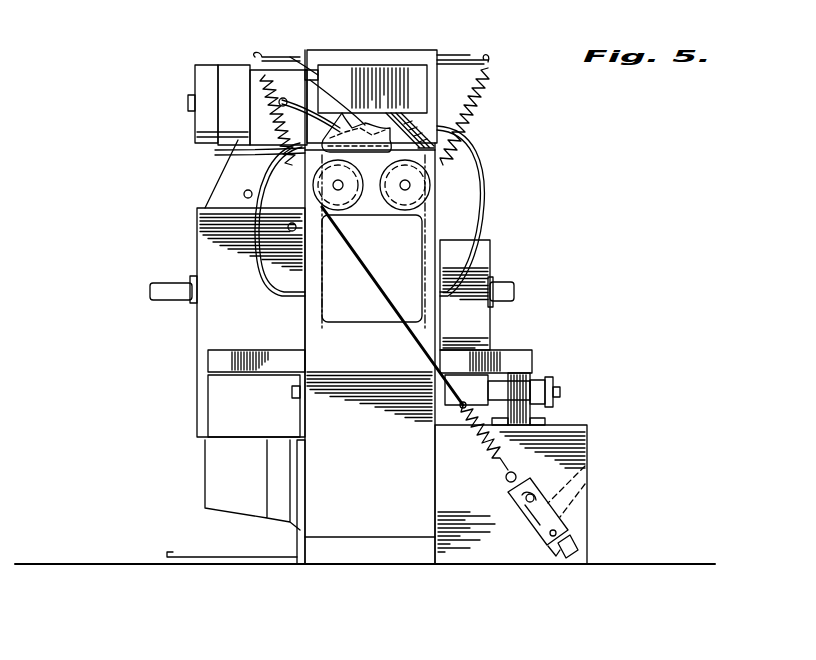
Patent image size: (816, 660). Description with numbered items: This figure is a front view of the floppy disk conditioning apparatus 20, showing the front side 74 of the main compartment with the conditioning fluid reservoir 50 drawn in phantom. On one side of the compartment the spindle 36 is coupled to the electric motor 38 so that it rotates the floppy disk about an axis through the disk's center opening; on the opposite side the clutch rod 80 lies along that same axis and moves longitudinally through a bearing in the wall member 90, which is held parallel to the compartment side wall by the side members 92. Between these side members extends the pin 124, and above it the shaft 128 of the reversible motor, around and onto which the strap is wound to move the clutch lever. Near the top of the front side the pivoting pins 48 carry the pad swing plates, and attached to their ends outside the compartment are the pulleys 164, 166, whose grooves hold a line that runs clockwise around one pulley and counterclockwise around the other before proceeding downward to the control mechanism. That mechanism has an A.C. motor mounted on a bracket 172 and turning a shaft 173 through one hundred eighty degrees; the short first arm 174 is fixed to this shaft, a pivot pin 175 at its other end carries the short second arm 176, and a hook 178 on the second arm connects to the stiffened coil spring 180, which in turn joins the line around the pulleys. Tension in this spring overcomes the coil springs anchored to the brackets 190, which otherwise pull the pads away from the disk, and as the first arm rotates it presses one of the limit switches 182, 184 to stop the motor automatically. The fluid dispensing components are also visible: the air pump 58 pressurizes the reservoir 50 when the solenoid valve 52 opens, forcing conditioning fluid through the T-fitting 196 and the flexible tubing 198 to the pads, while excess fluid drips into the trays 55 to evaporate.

The apparatus 20 is at (645, 183).
The spindle 36 is at (515, 292).
The electric motor 38 is at (492, 255).
The pivoting pin 48 is at (405, 210).
The reservoir 50 is at (355, 340).
The solenoid valve 52 is at (200, 73).
The tray 55 is at (215, 368).
The air pump 58 is at (212, 475).
The front side 74 is at (305, 530).
The clutch rod 80 is at (178, 290).
The wall member 90 is at (197, 248).
The side member 92 is at (235, 163).
The pin 124 is at (290, 230).
The shaft 128 is at (244, 194).
The pulley 164 is at (333, 187).
The pulley 166 is at (420, 200).
The bracket 172 is at (590, 428).
The shaft 173 is at (590, 463).
The short first arm 174 is at (590, 480).
The pivot pin 175 is at (548, 530).
The short second arm 176 is at (590, 450).
The hook 178 is at (506, 478).
The stiffened coil spring 180 is at (508, 468).
The limit switch 182 is at (470, 450).
The limit switch 184 is at (580, 548).
The bracket 190 is at (277, 55).
The T-fitting 196 is at (395, 110).
The flexible tubing 198 is at (325, 120).